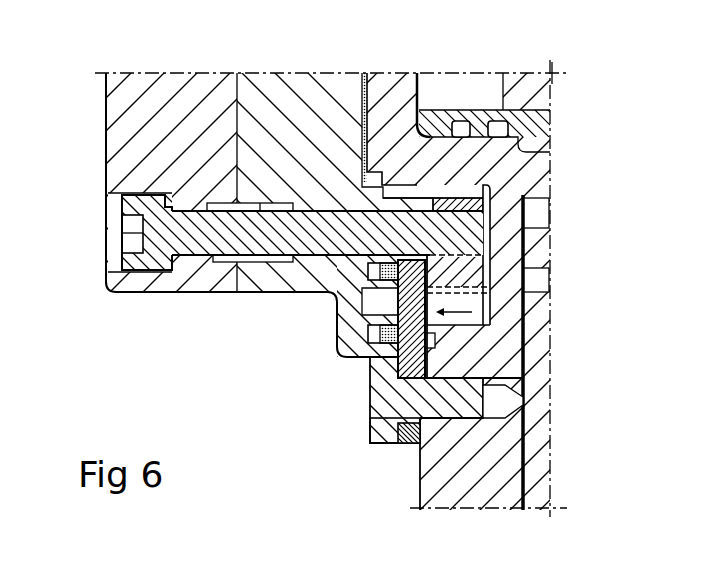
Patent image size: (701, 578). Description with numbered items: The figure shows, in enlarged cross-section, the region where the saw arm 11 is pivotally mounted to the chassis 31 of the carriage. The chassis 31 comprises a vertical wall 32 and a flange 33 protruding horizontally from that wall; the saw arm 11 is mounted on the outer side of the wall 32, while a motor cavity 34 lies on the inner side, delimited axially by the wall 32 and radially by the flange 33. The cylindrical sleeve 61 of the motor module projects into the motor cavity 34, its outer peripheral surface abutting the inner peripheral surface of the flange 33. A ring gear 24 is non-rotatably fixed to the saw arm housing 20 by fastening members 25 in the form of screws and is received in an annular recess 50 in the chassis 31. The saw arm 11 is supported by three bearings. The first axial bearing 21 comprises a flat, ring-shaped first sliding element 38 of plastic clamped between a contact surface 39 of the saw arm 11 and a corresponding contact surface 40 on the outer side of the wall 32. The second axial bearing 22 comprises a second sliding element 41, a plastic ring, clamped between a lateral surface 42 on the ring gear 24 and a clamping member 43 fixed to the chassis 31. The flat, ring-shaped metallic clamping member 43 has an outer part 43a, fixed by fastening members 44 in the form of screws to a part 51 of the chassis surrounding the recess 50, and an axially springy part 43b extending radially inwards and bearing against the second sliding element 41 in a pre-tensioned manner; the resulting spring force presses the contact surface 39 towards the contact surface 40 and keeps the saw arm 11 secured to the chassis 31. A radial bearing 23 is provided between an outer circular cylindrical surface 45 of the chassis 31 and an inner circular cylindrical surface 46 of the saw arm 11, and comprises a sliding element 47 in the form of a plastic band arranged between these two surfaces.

The saw arm 11 is at (183, 309).
The saw arm housing 20 is at (114, 108).
The first axial bearing 21 is at (352, 98).
The second axial bearing 22 is at (493, 327).
The radial bearing 23 is at (478, 110).
The ring gear 24 is at (524, 256).
The fastening members 25 is at (153, 236).
The chassis 31 is at (467, 497).
The vertical wall 32 is at (396, 100).
The flange 33 is at (527, 197).
The motor cavity 34 is at (531, 96).
The first sliding element 38 is at (368, 80).
The contact surface 39 is at (358, 84).
The contact surface 40 is at (373, 100).
The second sliding element 41 is at (493, 300).
The lateral surface 42 is at (493, 287).
The clamping member 43 is at (368, 375).
The outer part 43a is at (408, 443).
The axially springy part 43b is at (334, 313).
The fastening members 44 is at (385, 403).
The outer circular cylindrical surface 45 is at (545, 160).
The inner circular cylindrical surface 46 is at (448, 165).
The sliding element 47 is at (472, 184).
The annular recess 50 is at (493, 315).
The part of the chassis 51 is at (440, 364).
The cylindrical sleeve 61 is at (525, 106).